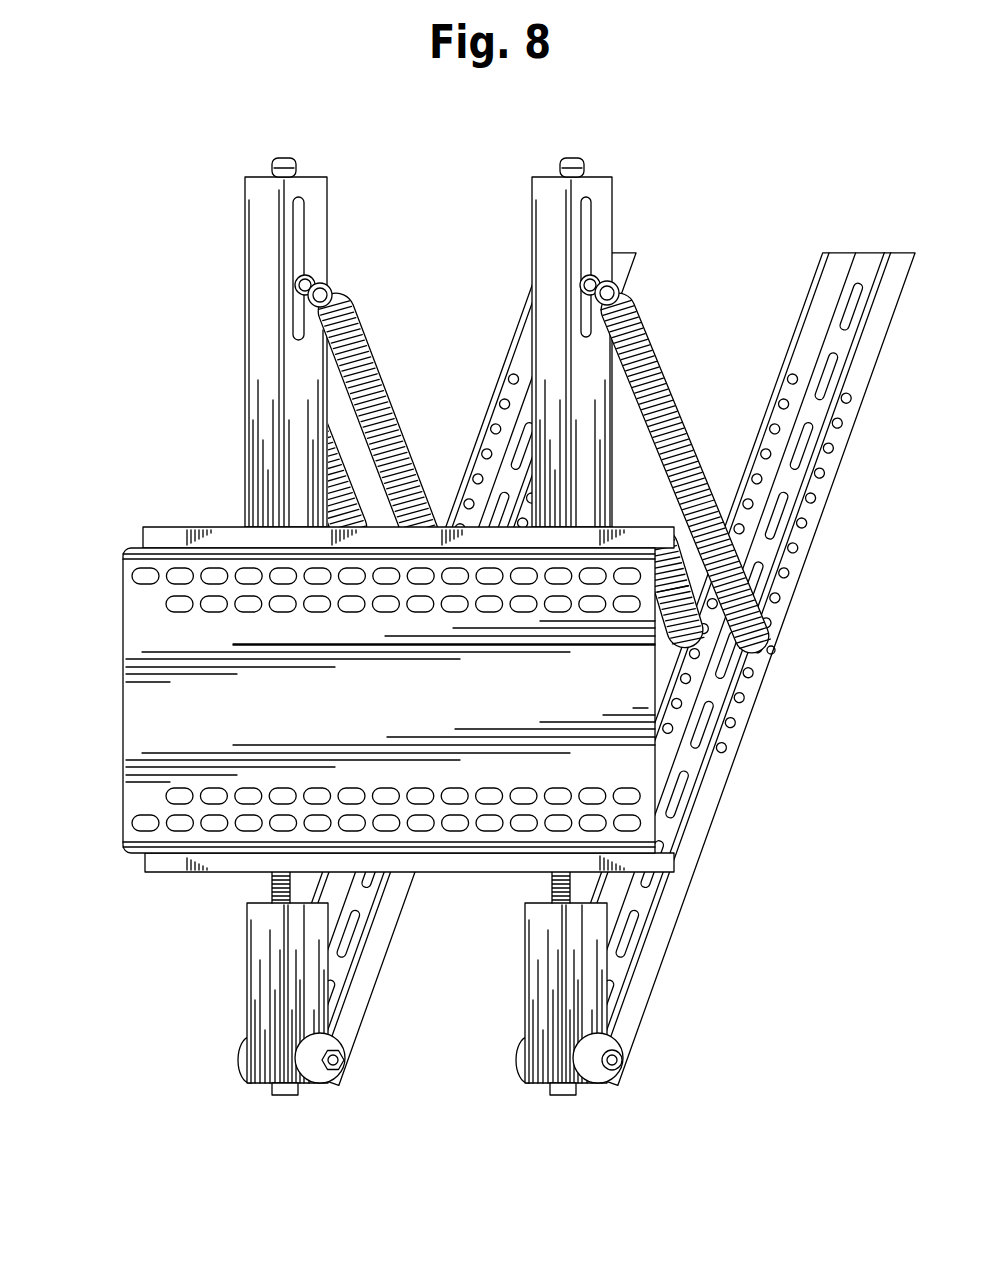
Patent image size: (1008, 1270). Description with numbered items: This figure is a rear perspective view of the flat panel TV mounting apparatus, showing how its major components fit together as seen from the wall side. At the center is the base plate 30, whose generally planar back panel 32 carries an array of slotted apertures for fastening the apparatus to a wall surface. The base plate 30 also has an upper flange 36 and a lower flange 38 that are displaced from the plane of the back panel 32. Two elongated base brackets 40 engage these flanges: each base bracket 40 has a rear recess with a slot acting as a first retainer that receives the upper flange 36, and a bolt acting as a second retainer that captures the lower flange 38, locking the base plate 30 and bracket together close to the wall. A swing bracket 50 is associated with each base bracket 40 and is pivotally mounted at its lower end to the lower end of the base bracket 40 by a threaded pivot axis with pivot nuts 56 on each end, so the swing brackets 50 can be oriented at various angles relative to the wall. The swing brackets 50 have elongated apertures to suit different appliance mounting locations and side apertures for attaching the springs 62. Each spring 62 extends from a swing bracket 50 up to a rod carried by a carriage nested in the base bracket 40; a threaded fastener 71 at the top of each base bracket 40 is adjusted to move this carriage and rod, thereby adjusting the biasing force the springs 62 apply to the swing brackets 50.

The base plate 30 is at (112, 712).
The back panel 32 is at (412, 711).
The upper flange 36 is at (213, 527).
The lower flange 38 is at (190, 873).
The base bracket 40 is at (257, 975).
The swing bracket 50 is at (657, 948).
The pivot nut 56 is at (617, 1085).
The spring 62 is at (672, 403).
The threaded fastener 71 is at (288, 158).